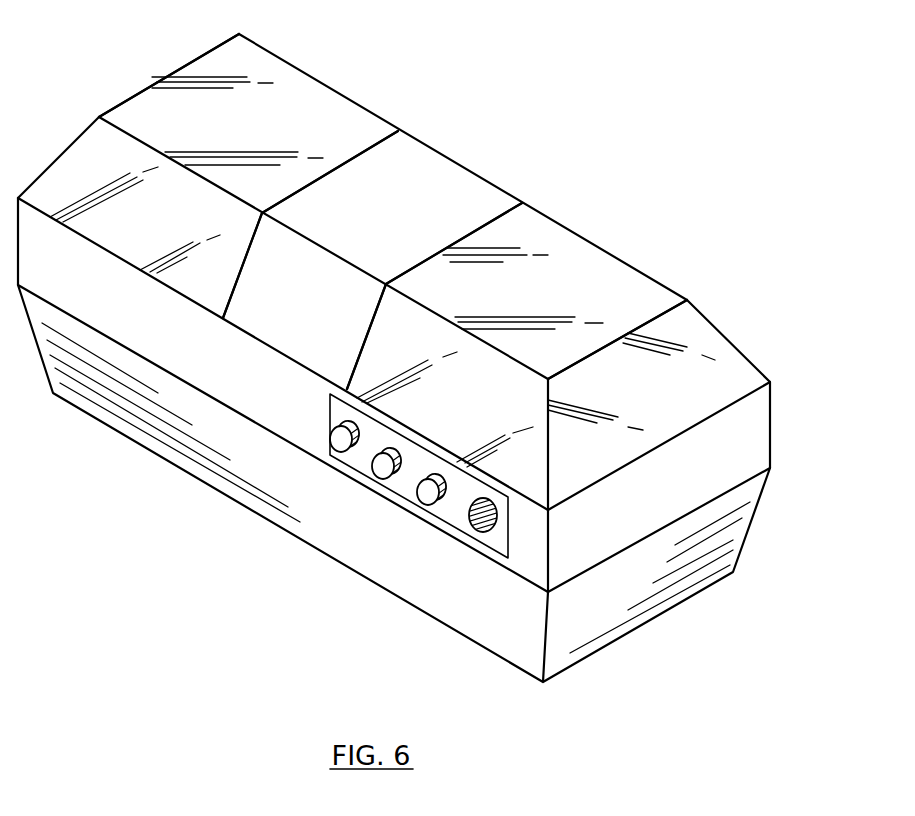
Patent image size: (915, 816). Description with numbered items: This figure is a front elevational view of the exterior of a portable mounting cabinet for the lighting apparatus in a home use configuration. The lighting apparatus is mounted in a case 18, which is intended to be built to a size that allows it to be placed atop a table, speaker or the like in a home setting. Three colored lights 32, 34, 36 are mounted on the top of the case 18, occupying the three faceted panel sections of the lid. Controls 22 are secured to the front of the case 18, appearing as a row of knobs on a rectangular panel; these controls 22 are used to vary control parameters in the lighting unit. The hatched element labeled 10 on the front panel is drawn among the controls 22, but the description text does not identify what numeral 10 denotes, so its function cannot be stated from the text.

The indicator light 10 is at (478, 533).
The case 18 is at (757, 323).
The controls 22 is at (370, 468).
The colored light 32 is at (157, 98).
The colored light 34 is at (428, 163).
The colored light 36 is at (568, 253).